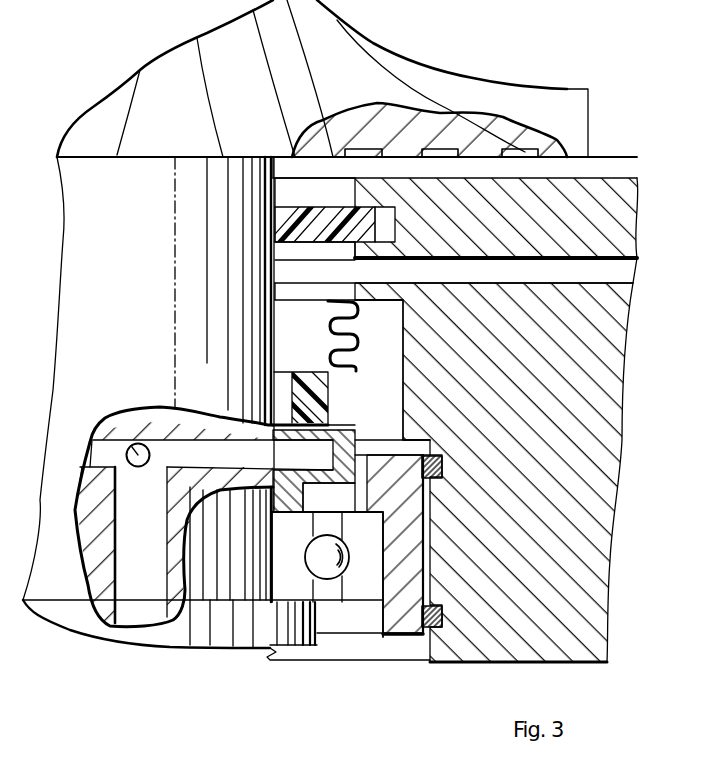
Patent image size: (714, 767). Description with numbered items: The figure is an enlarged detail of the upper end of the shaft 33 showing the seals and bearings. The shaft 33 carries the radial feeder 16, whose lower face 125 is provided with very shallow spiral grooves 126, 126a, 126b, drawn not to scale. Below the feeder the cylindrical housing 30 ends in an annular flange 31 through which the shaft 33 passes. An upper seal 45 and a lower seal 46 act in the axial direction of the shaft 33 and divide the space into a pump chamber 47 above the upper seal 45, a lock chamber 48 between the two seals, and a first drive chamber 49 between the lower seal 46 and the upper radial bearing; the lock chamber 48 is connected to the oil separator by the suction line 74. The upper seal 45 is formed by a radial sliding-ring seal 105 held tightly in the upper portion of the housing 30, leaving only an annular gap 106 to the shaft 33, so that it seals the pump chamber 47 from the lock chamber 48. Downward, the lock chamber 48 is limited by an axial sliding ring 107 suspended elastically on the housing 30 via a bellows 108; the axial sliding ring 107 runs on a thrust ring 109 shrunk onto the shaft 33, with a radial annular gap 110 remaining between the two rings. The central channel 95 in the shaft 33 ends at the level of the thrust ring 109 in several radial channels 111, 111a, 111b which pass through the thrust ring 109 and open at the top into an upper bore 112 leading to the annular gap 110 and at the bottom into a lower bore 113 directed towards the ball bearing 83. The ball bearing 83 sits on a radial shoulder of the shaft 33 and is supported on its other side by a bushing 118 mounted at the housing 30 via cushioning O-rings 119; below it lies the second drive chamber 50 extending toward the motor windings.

The radial feeder 16 is at (173, 67).
The shaft 33 is at (117, 262).
The pump chamber 47 is at (323, 172).
The spiral groove 126 is at (383, 150).
The spiral groove 126a is at (452, 150).
The spiral groove 126b is at (527, 152).
The lower face of the radial feeder 125 is at (550, 162).
The annular flange 31 is at (625, 200).
The suction line 74 is at (620, 273).
The cylindrical housing 30 is at (583, 580).
The first drive chamber 49 is at (392, 366).
The annular gap 106 is at (277, 218).
The radial sliding-ring seal 105 is at (328, 233).
The upper seal 45 is at (336, 249).
The lock chamber 48 is at (293, 313).
The bellows 108 is at (355, 360).
The axial sliding ring 107 is at (310, 372).
The lower seal 46 is at (342, 390).
The radial annular gap 110 is at (327, 427).
The upper bore 112 is at (308, 443).
The lower bore 113 is at (322, 470).
The thrust ring 109 is at (343, 470).
The bushing 118 is at (403, 617).
The cushioning O-rings 119 is at (443, 615).
The ball bearing 83 is at (360, 595).
The second drive chamber 50 is at (273, 567).
The radial channel 111 is at (187, 453).
The radial channel 111a is at (136, 442).
The radial channel 111b is at (95, 457).
The central channel 95 is at (146, 612).